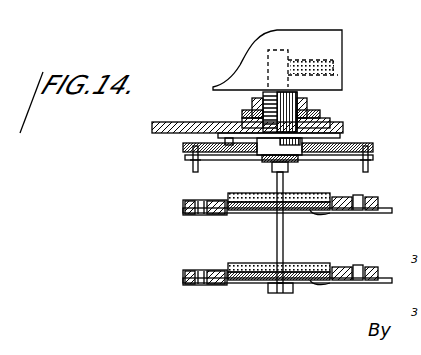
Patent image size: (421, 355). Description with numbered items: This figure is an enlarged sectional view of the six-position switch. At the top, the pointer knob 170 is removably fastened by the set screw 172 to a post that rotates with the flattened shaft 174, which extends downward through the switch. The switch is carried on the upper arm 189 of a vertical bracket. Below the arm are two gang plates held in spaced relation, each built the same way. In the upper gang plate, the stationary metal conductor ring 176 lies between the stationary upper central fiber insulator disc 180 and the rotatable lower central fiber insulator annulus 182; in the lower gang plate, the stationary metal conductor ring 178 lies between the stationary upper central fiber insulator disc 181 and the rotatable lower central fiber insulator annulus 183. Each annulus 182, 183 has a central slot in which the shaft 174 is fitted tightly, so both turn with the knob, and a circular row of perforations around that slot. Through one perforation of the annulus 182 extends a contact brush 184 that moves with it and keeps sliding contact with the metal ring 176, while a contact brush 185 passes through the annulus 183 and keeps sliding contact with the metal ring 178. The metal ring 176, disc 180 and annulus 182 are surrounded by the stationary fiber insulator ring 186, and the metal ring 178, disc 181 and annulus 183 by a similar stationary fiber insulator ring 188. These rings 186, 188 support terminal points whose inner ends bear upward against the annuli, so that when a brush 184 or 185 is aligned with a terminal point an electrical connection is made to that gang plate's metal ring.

The pointer knob 170 is at (246, 75).
The set screw 172 is at (328, 57).
The flattened shaft 174 is at (277, 181).
The stationary metal conductor ring 176 is at (337, 193).
The stationary metal conductor ring 178 is at (240, 265).
The upper central fiber insulator disc 180 is at (305, 150).
The upper central fiber insulator disc 181 is at (304, 263).
The lower central fiber insulator annulus 182 is at (233, 215).
The lower central fiber insulator annulus 183 is at (240, 282).
The contact brush 184 is at (310, 211).
The contact brush 185 is at (303, 284).
The stationary fiber insulator ring 186 is at (185, 208).
The stationary fiber insulator ring 188 is at (187, 278).
The upper arm 189 is at (178, 122).